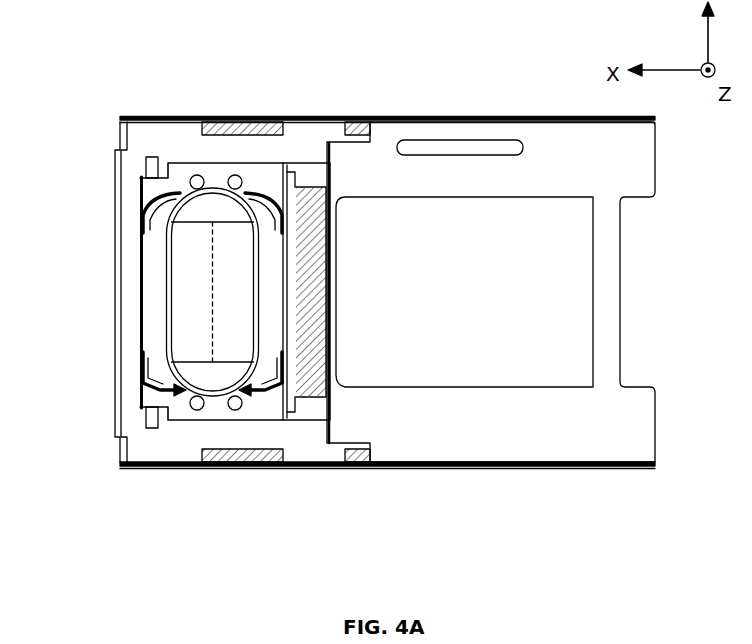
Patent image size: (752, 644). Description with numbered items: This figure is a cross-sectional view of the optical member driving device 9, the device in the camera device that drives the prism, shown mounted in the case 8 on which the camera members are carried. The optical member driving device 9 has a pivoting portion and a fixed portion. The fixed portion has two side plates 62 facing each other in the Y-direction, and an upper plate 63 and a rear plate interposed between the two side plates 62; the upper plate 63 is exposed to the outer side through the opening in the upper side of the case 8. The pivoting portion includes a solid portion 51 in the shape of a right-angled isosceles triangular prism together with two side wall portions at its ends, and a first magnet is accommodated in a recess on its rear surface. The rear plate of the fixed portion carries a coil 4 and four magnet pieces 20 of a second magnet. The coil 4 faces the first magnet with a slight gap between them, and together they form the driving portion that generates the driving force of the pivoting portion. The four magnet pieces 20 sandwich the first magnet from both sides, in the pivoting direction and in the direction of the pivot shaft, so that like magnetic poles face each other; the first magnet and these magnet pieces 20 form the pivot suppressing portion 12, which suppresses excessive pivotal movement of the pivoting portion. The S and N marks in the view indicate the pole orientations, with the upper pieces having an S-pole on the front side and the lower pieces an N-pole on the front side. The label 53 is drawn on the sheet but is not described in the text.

The optical member driving device 9 is at (92, 90).
The case 8 is at (650, 468).
The side plate 62 is at (311, 129).
The upper plate 63 is at (116, 274).
The solid portion 51 is at (140, 176).
The yoke side wall 53 is at (141, 300).
The coil 4 is at (213, 189).
The pivot suppressing portion 12 is at (212, 400).
The magnet piece 20 is at (164, 415).